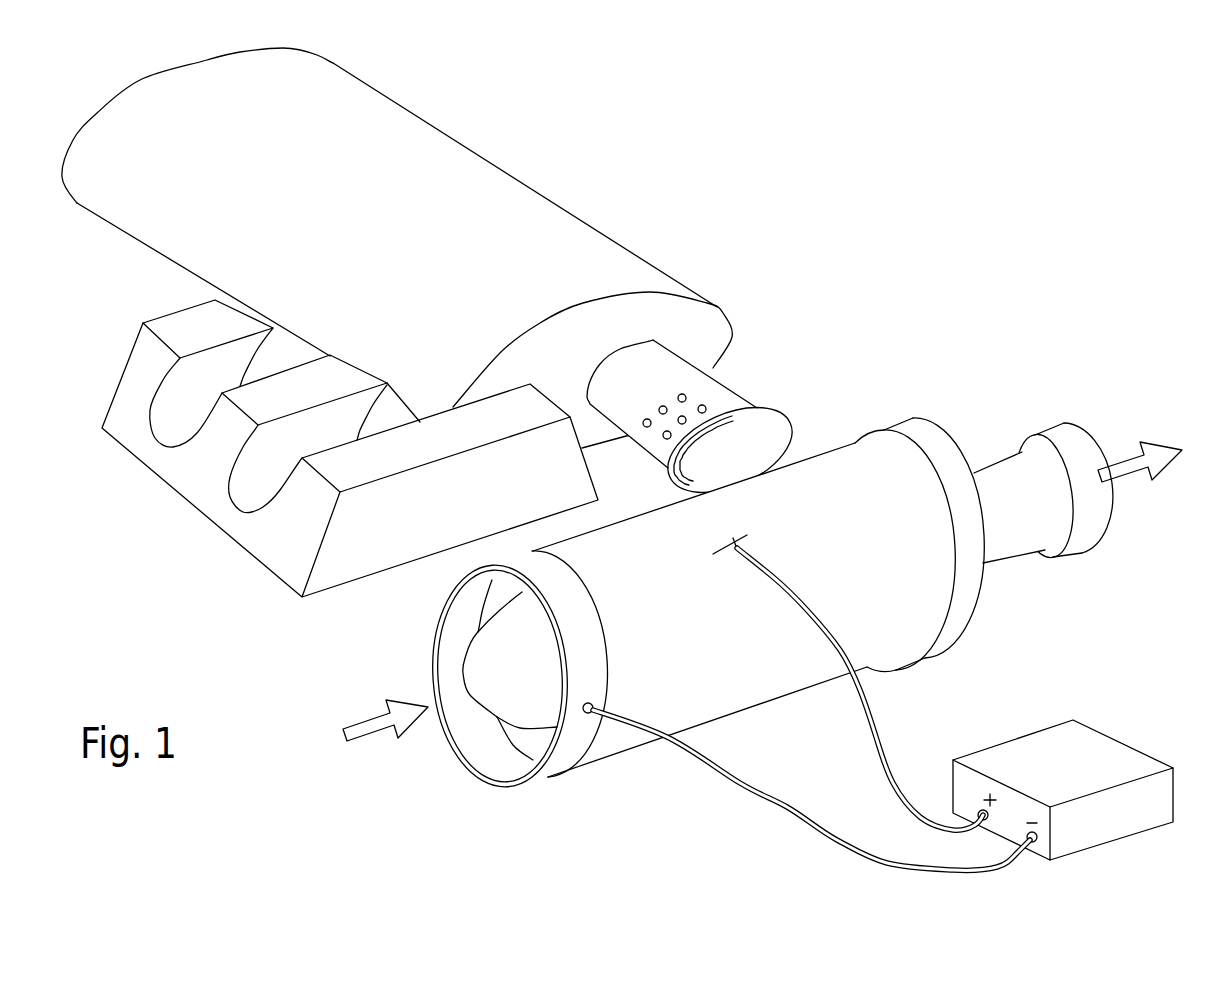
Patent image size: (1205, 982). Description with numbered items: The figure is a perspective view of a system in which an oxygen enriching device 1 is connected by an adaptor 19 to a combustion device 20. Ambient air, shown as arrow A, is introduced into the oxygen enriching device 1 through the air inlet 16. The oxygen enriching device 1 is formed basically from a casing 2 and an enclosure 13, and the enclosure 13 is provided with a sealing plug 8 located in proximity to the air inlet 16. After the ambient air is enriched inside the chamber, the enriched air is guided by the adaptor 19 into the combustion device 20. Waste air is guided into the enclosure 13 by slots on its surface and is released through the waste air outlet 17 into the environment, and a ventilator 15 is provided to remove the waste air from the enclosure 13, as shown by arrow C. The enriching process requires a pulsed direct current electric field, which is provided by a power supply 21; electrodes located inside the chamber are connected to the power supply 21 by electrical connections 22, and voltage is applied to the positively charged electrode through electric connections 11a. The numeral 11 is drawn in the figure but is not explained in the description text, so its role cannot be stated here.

The oxygen enriching device 1 is at (852, 503).
The casing 2 is at (970, 583).
The sealing plug 8 is at (507, 673).
The electrode terminal 11 is at (583, 712).
The electric connections 11a is at (725, 543).
The enclosure 13 is at (1017, 513).
The ventilator 15 is at (1068, 430).
The air inlet 16 is at (500, 590).
The waste air outlet 17 is at (1098, 448).
The adaptor 19 is at (733, 458).
The combustion device 20 is at (505, 250).
The power supply 21 is at (1080, 760).
The electrical connections 22 is at (873, 707).
The ambient air A is at (363, 720).
The waste air removal C is at (1130, 477).